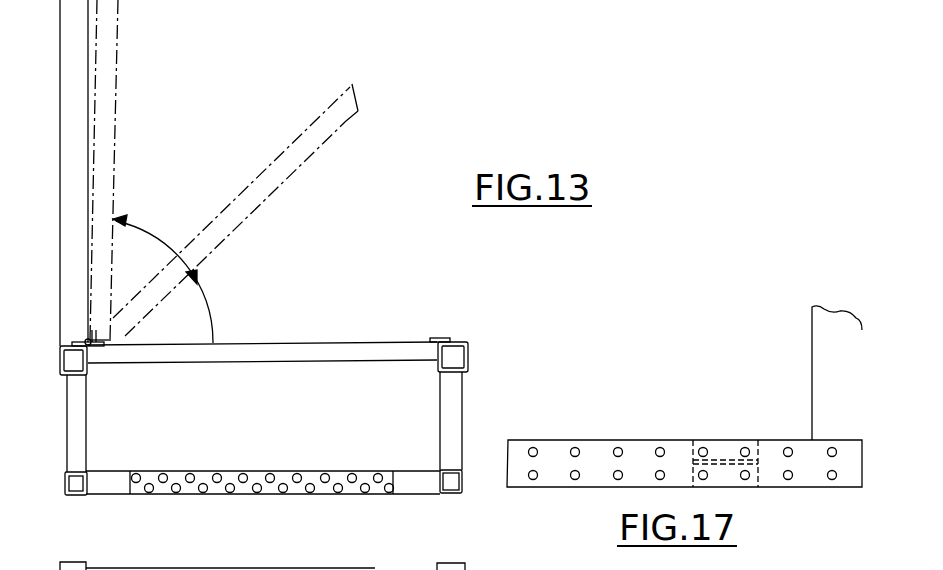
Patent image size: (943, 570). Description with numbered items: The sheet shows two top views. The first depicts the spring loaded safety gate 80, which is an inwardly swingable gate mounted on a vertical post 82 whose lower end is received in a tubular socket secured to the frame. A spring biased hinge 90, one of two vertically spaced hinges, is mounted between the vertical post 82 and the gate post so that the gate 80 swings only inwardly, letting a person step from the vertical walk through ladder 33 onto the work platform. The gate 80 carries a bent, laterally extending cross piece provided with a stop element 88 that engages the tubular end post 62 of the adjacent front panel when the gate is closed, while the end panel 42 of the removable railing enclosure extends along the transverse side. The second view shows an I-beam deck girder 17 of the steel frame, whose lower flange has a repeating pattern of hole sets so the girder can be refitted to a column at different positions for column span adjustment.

In FIG. 13, the end panel 42 is at (59, 101).
In FIG. 13, the inwardly swingable gate 80 is at (120, 37).
In FIG. 13, the stop element 88 is at (360, 90).
In FIG. 13, the tubular end post 62 is at (470, 350).
In FIG. 13, the vertical post 82 is at (55, 373).
In FIG. 13, the spring biased hinge 90 is at (97, 347).
In FIG. 13, the walk through ladder 33 is at (411, 494).
In FIG. 17, the I-beam deck girder 17 is at (573, 440).